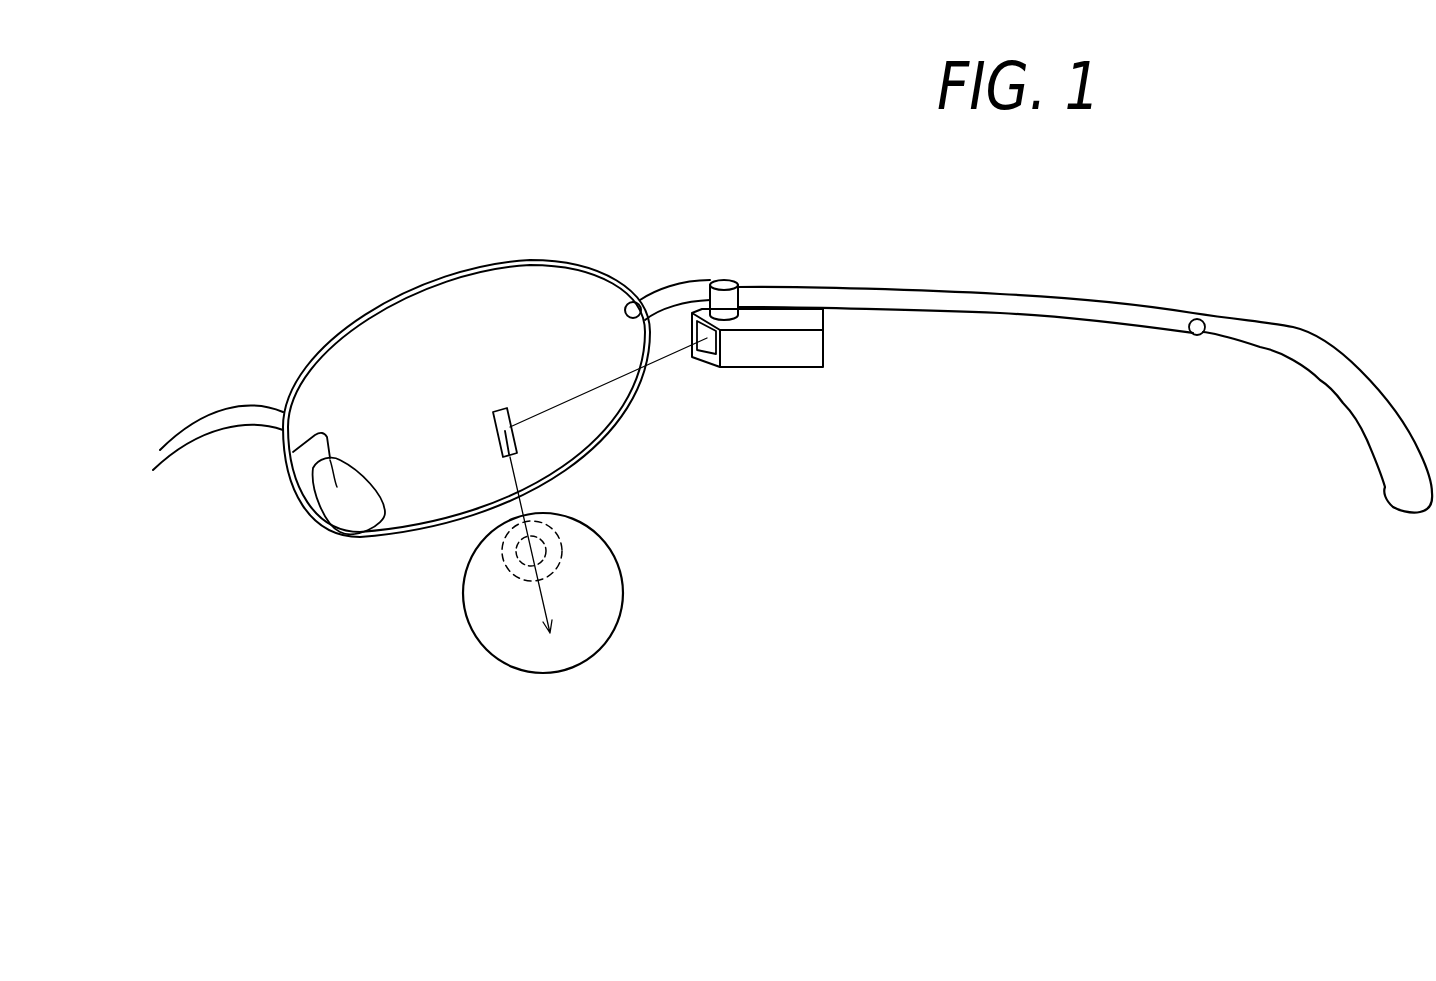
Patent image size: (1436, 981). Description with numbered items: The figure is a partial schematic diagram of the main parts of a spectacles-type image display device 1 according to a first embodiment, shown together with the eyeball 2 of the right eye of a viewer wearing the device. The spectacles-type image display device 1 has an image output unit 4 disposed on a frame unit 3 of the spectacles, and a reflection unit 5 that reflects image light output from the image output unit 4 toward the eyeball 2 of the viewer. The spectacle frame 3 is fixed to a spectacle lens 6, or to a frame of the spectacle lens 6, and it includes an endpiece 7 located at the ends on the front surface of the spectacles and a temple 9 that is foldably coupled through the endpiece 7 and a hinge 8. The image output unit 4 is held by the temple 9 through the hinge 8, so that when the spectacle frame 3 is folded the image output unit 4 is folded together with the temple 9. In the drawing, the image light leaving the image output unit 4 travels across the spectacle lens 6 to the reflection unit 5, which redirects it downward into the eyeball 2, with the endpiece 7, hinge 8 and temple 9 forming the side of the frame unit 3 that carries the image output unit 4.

The spectacles-type image display device 1 is at (1042, 532).
The eyeball 2 is at (603, 598).
The frame unit 3 is at (635, 155).
The image output unit 4 is at (787, 353).
The reflection unit 5 is at (517, 443).
The spectacle lens 6 is at (388, 320).
The endpiece 7 is at (660, 300).
The hinge 8 is at (727, 287).
The temple 9 is at (802, 293).